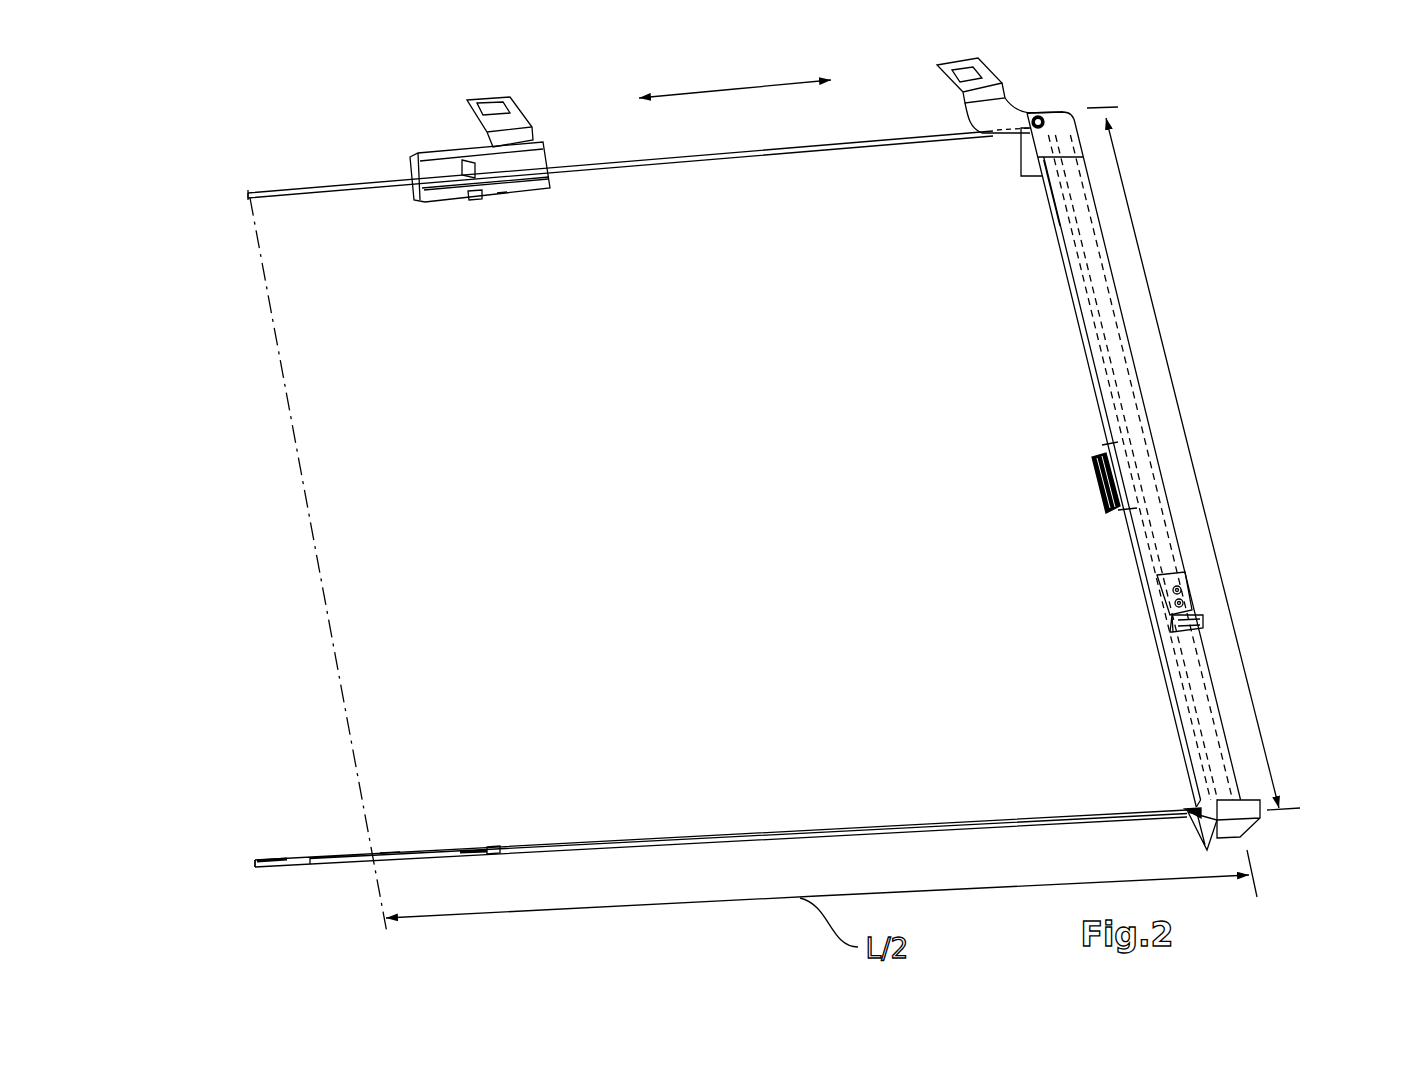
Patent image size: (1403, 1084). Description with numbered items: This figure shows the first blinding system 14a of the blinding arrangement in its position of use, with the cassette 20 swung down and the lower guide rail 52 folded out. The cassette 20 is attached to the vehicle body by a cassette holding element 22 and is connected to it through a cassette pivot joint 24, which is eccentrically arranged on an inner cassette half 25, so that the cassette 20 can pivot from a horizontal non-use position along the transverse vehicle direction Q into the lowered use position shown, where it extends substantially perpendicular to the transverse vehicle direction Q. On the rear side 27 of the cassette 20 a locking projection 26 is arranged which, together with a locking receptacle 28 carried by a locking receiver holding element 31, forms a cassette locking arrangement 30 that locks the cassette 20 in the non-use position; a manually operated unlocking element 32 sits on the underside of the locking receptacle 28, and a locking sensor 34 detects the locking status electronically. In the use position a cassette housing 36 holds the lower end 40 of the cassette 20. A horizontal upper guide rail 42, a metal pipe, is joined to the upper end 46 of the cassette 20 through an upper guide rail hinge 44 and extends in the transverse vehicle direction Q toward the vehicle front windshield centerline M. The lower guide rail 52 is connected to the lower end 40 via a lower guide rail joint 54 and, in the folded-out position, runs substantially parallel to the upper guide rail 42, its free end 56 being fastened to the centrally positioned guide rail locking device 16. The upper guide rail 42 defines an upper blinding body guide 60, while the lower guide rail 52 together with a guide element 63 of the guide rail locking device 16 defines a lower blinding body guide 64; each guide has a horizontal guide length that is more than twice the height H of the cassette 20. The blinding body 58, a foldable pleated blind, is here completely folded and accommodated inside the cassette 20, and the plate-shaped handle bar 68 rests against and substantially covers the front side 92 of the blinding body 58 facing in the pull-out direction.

The blinding system 14a is at (1240, 172).
The guide rail locking device 16 is at (383, 851).
The cassette 20 is at (1130, 340).
The cassette holding element 22 is at (968, 100).
The cassette pivot joint 24 is at (1070, 113).
The inner cassette half 25 is at (1053, 203).
The locking projection 26 is at (1198, 618).
The rear side 27 is at (1175, 543).
The locking receptacle 28 is at (435, 157).
The cassette locking arrangement 30 is at (524, 208).
The locking receiver holding element 31 is at (510, 117).
The unlocking element 32 is at (478, 205).
The locking sensor 34 is at (458, 150).
The cassette housing 36 is at (1257, 800).
The lower end 40 is at (1244, 776).
The upper guide rail 42 is at (730, 154).
The upper guide rail hinge 44 is at (1018, 144).
The upper end 46 is at (1082, 142).
The lower guide rail 52 is at (782, 832).
The lower guide rail joint 54 is at (1187, 807).
The free end 56 is at (494, 842).
The blinding body 58 is at (1124, 403).
The upper blinding body guide 60 is at (244, 199).
The guide element 63 is at (310, 860).
The lower blinding body guide 64 is at (236, 863).
The handle bar 68 is at (1110, 391).
The front side 92 is at (1095, 323).
The height of the cassette H is at (1198, 472).
The vehicle front windshield centerline M is at (312, 528).
The transverse vehicle direction Q is at (735, 88).